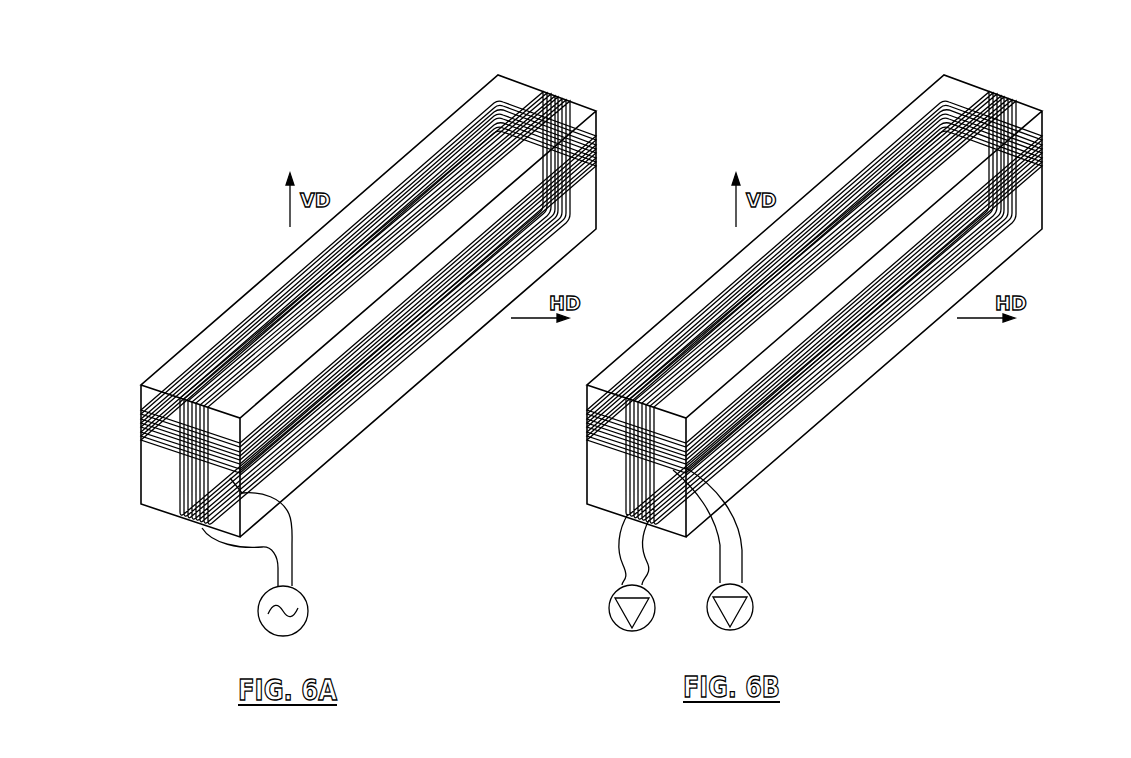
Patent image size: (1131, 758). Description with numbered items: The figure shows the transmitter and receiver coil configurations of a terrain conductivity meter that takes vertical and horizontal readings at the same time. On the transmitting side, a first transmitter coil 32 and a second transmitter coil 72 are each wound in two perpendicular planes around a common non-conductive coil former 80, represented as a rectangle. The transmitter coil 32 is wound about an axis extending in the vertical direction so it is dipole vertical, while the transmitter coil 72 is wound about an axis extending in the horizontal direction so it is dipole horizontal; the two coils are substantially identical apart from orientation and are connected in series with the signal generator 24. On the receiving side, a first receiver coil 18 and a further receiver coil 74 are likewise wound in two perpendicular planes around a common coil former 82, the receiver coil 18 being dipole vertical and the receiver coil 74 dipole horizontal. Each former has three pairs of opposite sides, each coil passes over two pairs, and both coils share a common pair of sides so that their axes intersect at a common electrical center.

In FIG. 6A, the coil former 80 is at (573, 250).
In FIG. 6A, the transmitter coil 32 is at (141, 447).
In FIG. 6A, the transmitter coil 72 is at (527, 99).
In FIG. 6A, the signal generator 24 is at (308, 607).
In FIG. 6B, the coil former 82 is at (1020, 250).
In FIG. 6B, the receiver coil 18 is at (587, 444).
In FIG. 6B, the receiver coil 74 is at (973, 98).